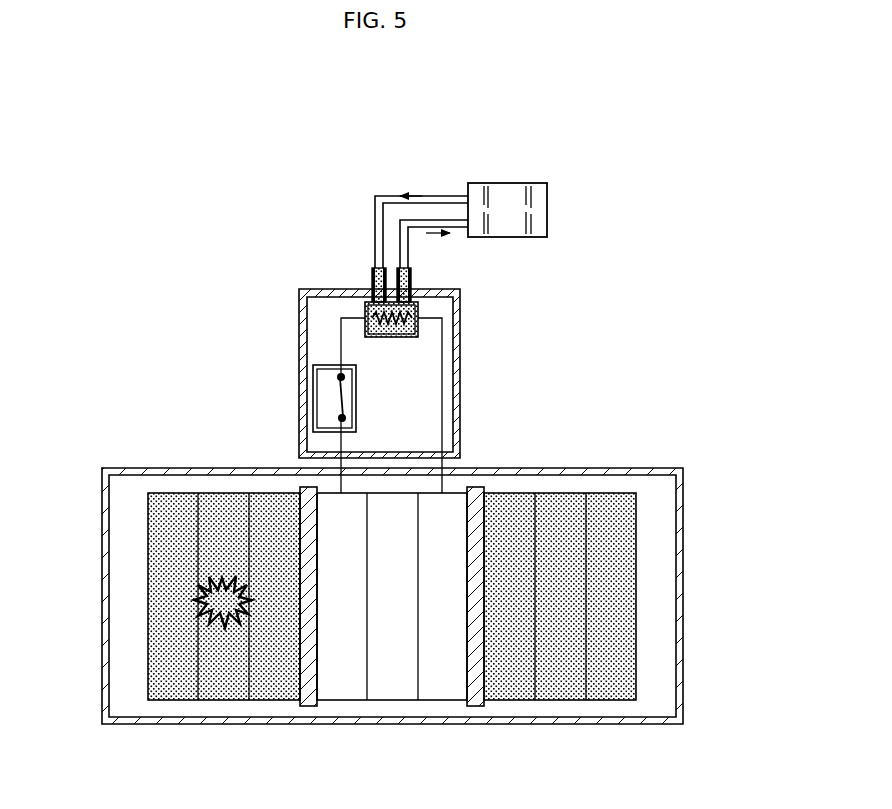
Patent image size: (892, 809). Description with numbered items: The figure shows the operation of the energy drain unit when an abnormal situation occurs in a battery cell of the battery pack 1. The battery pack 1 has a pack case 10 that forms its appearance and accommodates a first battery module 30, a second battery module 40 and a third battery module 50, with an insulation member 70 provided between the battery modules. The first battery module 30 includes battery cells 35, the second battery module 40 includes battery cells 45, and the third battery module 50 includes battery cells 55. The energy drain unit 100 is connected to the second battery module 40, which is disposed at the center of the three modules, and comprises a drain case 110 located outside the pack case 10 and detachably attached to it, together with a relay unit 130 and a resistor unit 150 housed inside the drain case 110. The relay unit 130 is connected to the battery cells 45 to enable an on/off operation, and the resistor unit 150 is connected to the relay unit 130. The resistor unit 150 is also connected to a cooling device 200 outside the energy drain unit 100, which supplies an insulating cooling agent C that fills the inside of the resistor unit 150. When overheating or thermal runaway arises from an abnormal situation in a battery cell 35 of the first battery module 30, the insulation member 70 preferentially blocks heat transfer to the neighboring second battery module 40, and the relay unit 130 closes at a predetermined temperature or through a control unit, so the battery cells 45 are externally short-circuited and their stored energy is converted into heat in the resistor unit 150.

The battery pack 1 is at (196, 134).
The pack case 10 is at (102, 596).
The first battery module 30 is at (224, 629).
The battery cell 35 is at (172, 687).
The second battery module 40 is at (390, 702).
The battery cell 45 is at (442, 683).
The third battery module 50 is at (558, 702).
The battery cell 55 is at (610, 683).
The insulation member 70 is at (308, 708).
The energy drain unit 100 is at (294, 292).
The drain case 110 is at (460, 374).
The relay unit 130 is at (313, 396).
The resistor unit 150 is at (429, 306).
The cooling device 200 is at (514, 184).
The cooling agent C is at (427, 191).